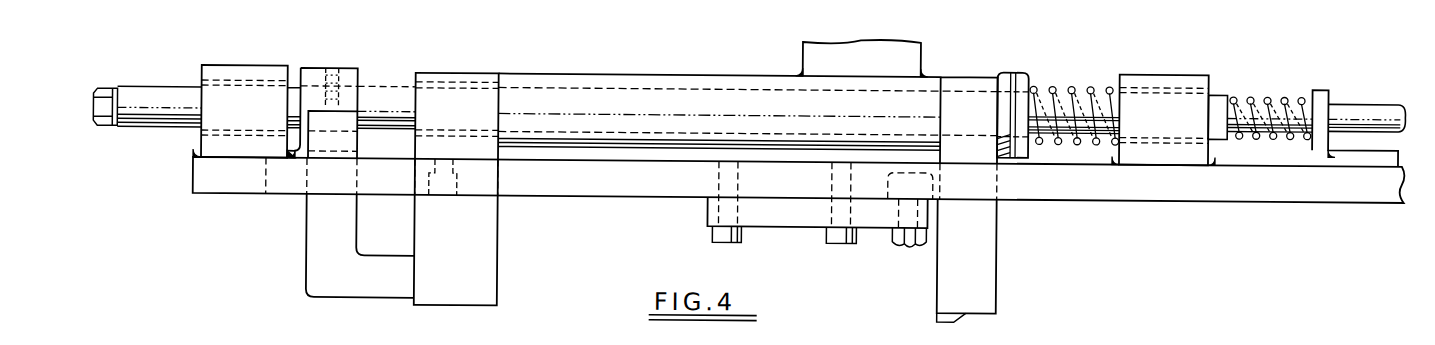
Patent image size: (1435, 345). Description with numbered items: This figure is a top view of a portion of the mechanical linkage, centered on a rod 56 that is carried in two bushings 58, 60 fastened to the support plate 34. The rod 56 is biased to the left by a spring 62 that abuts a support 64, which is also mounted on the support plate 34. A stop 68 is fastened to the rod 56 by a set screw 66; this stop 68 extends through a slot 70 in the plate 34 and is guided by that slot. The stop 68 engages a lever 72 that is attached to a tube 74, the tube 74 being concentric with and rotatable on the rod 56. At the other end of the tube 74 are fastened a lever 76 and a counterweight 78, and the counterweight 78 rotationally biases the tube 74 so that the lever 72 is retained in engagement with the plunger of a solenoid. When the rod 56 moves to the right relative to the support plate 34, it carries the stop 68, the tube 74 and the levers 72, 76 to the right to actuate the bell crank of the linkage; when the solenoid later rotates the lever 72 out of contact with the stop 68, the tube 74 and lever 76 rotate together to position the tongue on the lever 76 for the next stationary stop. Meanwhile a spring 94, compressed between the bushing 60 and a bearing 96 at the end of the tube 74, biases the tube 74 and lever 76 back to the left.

The support plate 34 is at (1308, 181).
The rod 56 is at (155, 90).
The bushing 58 is at (253, 72).
The bushing 60 is at (1193, 67).
The spring 62 is at (1267, 88).
The support 64 is at (1327, 92).
The set screw 66 is at (337, 66).
The stop 68 is at (313, 66).
The slot 70 is at (266, 193).
The lever 72 is at (487, 262).
The tube 74 is at (618, 71).
The lever 76 is at (985, 260).
The counterweight 78 is at (813, 52).
The spring 94 is at (1052, 83).
The bearing 96 is at (1018, 68).